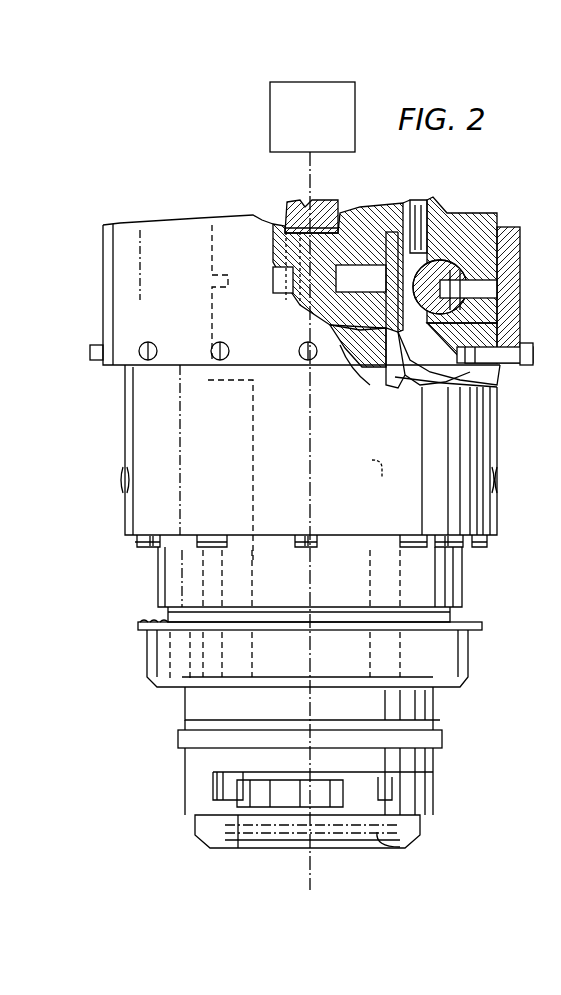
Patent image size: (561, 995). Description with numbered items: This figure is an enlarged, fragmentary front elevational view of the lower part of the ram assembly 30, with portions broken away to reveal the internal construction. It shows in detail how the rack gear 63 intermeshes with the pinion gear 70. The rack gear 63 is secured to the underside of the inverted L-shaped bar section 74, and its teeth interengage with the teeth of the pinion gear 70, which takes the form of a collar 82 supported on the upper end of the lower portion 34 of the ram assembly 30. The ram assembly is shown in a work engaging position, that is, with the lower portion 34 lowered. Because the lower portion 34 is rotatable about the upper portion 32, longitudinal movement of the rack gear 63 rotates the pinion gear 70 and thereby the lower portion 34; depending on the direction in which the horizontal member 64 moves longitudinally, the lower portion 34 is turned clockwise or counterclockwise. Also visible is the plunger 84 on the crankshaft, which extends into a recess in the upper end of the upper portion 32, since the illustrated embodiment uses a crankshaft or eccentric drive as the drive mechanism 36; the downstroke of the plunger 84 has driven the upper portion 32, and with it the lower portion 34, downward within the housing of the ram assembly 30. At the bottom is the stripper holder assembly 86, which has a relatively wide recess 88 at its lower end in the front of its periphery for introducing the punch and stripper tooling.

The ram assembly 30 is at (133, 215).
The upper portion 32 is at (348, 213).
The lower portion 34 is at (309, 450).
The drive mechanism 36 is at (270, 130).
The rack gear 63 is at (430, 365).
The horizontal member 64 is at (418, 252).
The pinion gear 70 is at (398, 362).
The inverted L-shaped bar section 74 is at (440, 262).
The collar 82 is at (373, 368).
The plunger 84 is at (327, 215).
The stripper holder assembly 86 is at (195, 823).
The recess 88 is at (380, 832).